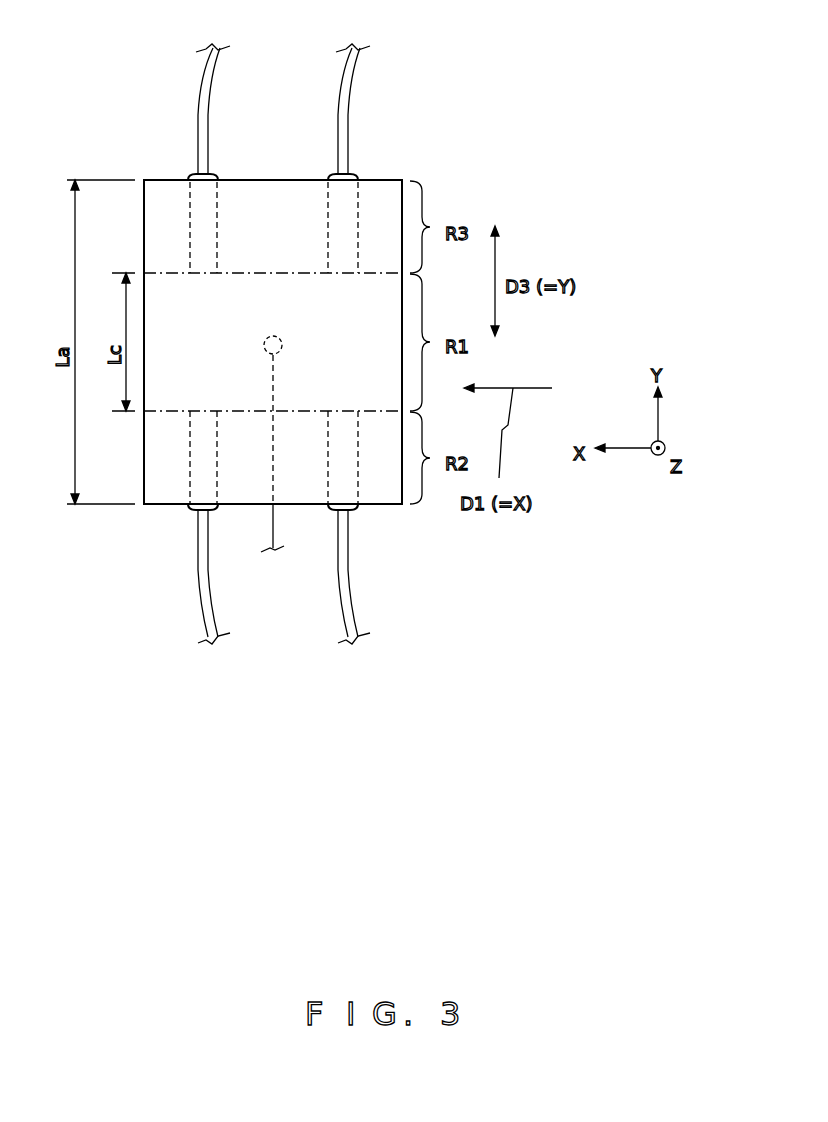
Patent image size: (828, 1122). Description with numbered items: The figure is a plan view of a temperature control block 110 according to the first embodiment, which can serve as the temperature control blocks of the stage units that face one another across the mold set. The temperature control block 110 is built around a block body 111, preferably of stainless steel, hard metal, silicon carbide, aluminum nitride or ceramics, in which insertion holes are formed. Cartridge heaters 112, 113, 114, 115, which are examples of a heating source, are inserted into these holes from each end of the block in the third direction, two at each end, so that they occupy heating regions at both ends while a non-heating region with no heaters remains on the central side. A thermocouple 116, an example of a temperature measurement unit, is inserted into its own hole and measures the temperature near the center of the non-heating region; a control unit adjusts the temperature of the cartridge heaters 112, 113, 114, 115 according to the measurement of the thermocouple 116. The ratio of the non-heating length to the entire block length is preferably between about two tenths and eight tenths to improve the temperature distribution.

The temperature control block 110 is at (398, 178).
The block body 111 is at (243, 180).
The cartridge heater 112 is at (188, 498).
The cartridge heater 113 is at (357, 436).
The cartridge heater 114 is at (193, 193).
The cartridge heater 115 is at (392, 196).
The thermocouple 116 is at (275, 335).